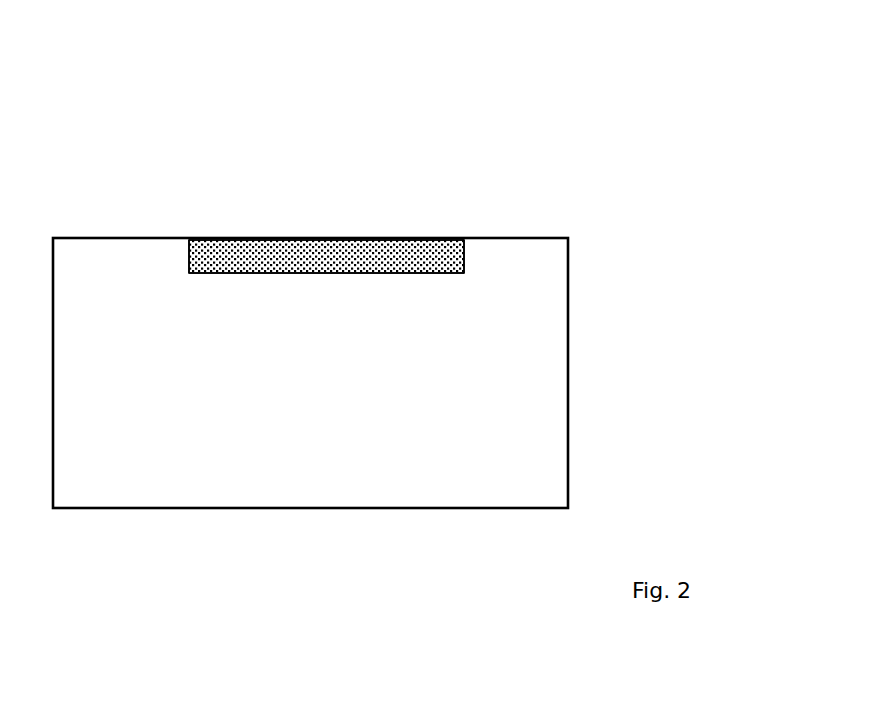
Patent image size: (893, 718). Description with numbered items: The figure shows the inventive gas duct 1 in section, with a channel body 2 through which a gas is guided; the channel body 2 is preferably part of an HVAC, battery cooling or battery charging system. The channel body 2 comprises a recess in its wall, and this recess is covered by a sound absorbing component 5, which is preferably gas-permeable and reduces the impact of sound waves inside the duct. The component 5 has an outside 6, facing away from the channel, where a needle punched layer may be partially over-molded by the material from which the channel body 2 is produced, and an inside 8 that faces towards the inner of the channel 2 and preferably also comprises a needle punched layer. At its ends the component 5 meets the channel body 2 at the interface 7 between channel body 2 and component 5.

The gas duct 1 is at (584, 104).
The channel body 2 is at (568, 332).
The sound absorbing component 5 is at (343, 253).
The outside of the component 6 is at (276, 238).
The interface between channel body and component 7 is at (207, 240).
The inside of component 8 is at (315, 274).